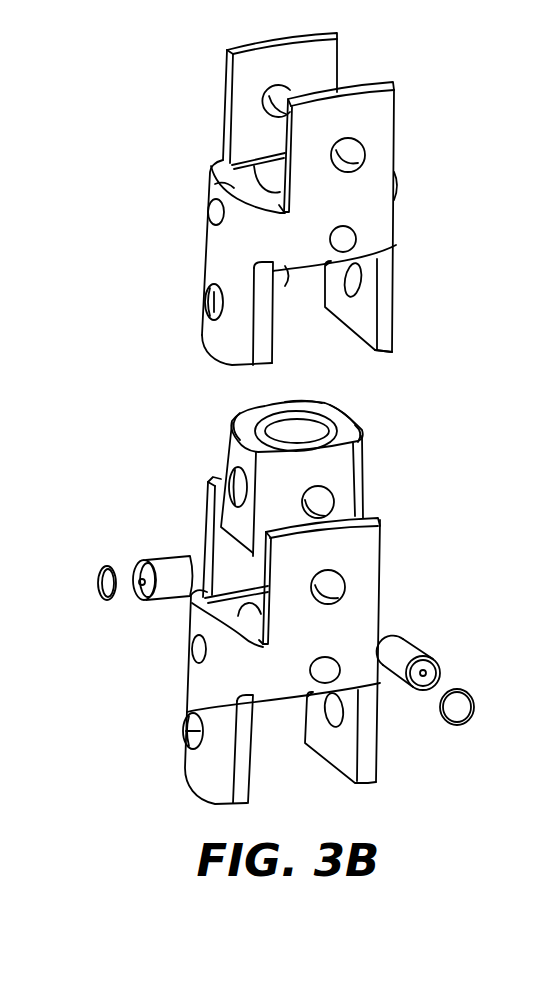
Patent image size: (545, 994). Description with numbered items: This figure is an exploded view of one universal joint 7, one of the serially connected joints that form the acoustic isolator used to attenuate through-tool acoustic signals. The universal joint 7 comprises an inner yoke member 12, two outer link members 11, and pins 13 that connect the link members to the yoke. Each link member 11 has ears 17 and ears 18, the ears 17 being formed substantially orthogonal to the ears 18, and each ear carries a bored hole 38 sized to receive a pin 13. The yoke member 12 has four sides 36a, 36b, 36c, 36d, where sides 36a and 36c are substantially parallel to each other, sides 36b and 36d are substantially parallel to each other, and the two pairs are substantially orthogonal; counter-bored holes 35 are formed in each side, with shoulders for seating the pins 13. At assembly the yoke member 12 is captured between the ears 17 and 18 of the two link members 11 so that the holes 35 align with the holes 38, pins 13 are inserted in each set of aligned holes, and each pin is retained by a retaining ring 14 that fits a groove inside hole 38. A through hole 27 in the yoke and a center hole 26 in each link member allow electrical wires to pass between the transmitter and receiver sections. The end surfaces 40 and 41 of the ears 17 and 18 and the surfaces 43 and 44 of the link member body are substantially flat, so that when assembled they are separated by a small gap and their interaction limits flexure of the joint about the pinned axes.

The universal joint 7 is at (90, 428).
The outer link member 11 is at (398, 213).
The inner yoke member 12 is at (365, 420).
The pin 13 is at (153, 558).
The retaining ring 14 is at (96, 590).
The ear 17 is at (399, 105).
The ear 18 is at (396, 312).
The center hole 26 is at (228, 162).
The through hole 27 is at (276, 434).
The counter-bored hole 35 is at (231, 493).
The side 36a is at (231, 434).
The side 36b is at (279, 432).
The side 36c is at (346, 414).
The side 36d is at (362, 439).
The bored hole 38 is at (355, 150).
The end surface 40 is at (295, 32).
The end surface 41 is at (392, 354).
The surface 43 is at (210, 183).
The surface 44 is at (257, 283).